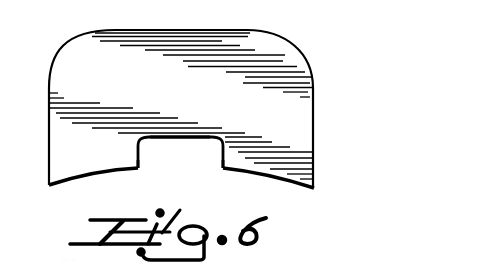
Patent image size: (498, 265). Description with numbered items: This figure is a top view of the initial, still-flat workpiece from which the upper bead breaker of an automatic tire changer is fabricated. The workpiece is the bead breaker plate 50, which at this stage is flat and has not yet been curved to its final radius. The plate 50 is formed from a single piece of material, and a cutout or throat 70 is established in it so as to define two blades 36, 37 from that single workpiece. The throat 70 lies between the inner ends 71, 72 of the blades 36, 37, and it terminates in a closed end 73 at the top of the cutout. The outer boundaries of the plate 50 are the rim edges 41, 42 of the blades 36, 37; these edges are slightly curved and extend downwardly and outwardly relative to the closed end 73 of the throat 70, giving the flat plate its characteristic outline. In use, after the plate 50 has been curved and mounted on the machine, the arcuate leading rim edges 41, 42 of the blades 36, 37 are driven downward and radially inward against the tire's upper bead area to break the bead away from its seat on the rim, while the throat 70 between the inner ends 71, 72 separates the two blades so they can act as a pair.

The bead breaker plate 50 is at (250, 68).
The blade 36 is at (78, 160).
The blade 37 is at (281, 157).
The rim edge 41 is at (92, 178).
The rim edge 42 is at (272, 178).
The throat 70 is at (180, 152).
The inner end 71 is at (140, 170).
The inner end 72 is at (222, 170).
The closed end of the throat 73 is at (177, 136).